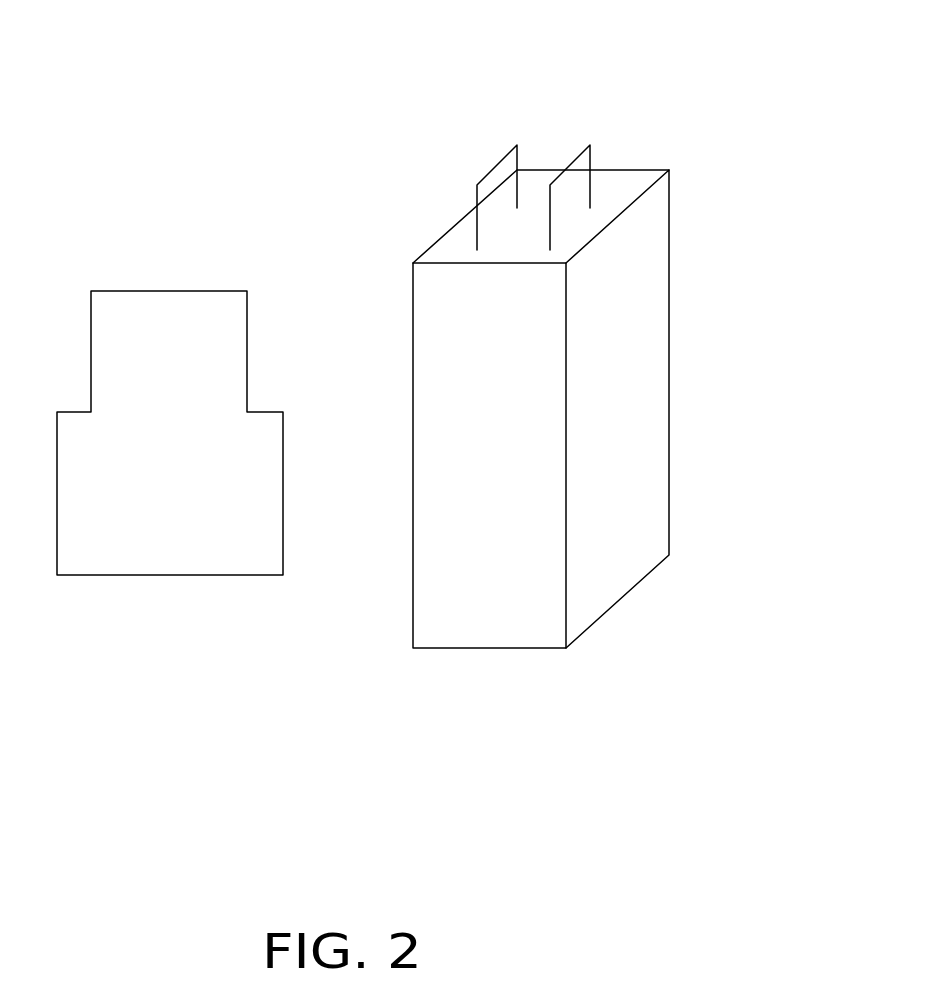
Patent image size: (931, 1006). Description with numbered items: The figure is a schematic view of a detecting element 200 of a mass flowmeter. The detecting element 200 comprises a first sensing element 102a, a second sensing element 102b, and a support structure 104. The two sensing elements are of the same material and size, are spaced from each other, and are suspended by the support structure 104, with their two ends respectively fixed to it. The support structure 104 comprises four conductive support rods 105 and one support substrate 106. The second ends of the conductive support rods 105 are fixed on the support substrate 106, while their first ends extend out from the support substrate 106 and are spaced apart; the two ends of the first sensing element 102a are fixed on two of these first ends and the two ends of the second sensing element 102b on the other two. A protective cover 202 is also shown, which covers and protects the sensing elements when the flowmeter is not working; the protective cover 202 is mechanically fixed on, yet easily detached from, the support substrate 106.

The detecting element 200 is at (506, 60).
The support structure 104 is at (758, 248).
The conductive support rods 105 is at (550, 215).
The support substrate 106 is at (566, 355).
The first sensing element 102a is at (493, 163).
The second sensing element 102b is at (572, 157).
The protective cover 202 is at (283, 467).